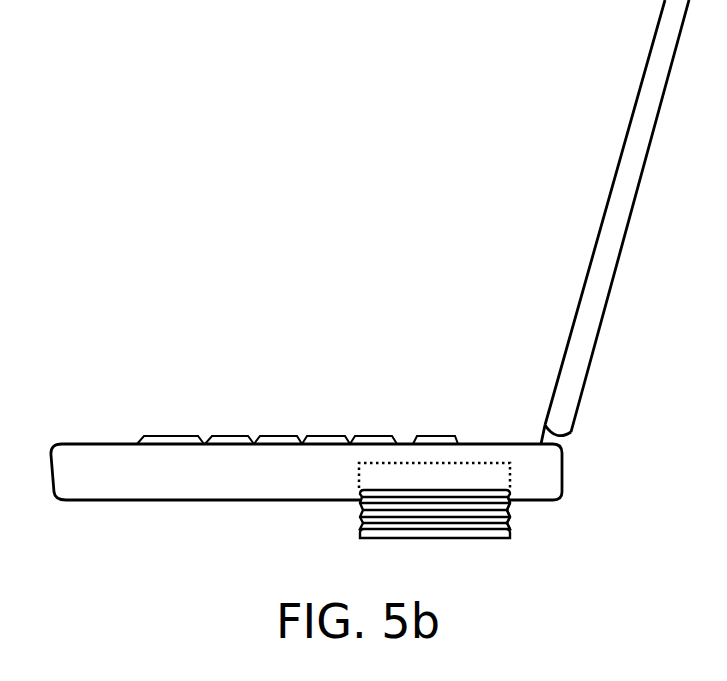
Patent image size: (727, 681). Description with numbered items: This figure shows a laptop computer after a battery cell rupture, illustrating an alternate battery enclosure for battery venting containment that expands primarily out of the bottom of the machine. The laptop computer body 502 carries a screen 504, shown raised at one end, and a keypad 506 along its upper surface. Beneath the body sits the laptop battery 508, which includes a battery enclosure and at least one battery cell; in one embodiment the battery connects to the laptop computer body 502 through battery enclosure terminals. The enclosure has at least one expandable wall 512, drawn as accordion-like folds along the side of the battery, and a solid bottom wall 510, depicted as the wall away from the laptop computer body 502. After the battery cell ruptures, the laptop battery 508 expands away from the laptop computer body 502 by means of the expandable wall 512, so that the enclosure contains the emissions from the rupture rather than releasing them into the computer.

The laptop computer body 502 is at (173, 501).
The screen 504 is at (578, 300).
The keypad 506 is at (368, 436).
The laptop battery 508 is at (359, 487).
The solid bottom wall 510 is at (447, 538).
The expandable wall 512 is at (510, 513).